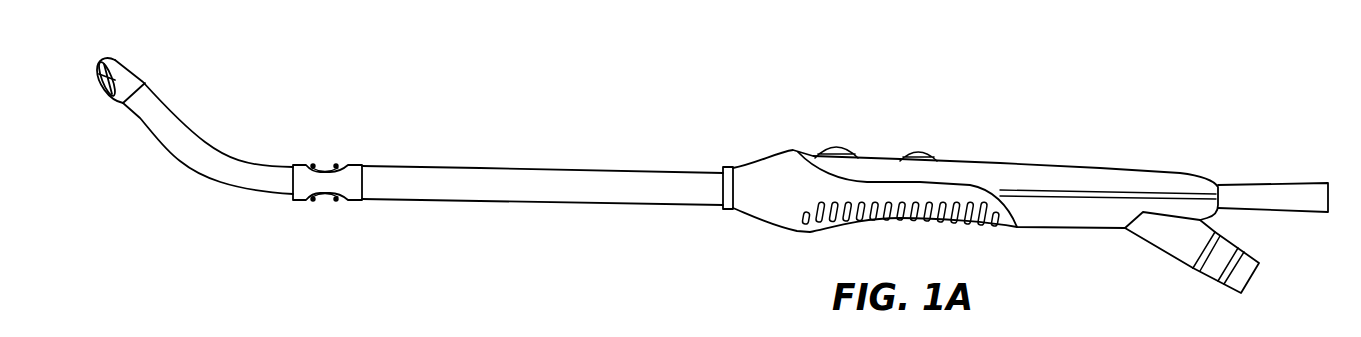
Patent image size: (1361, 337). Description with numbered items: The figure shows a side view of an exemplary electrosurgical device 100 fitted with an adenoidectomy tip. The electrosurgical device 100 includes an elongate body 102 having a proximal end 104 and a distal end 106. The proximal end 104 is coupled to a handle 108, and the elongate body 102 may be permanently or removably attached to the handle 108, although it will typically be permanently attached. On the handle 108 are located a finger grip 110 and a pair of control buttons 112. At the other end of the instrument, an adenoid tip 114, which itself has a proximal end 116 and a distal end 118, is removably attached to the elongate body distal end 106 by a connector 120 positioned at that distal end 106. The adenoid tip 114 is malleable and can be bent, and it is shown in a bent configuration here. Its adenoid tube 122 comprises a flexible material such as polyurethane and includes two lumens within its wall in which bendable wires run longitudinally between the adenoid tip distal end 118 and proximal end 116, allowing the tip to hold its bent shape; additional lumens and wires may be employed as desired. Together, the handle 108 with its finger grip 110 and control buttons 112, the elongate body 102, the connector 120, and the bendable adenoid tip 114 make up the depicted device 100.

The electrosurgical device 100 is at (545, 110).
The elongate body 102 is at (578, 203).
The proximal end 104 is at (720, 207).
The distal end 106 is at (367, 202).
The handle 108 is at (1105, 163).
The finger grip 110 is at (947, 228).
The control buttons 112 is at (934, 135).
The adenoid tip 114 is at (170, 166).
The proximal end 116 is at (358, 202).
The distal end 118 is at (142, 76).
The connector 120 is at (313, 165).
The adenoid tube 122 is at (198, 135).